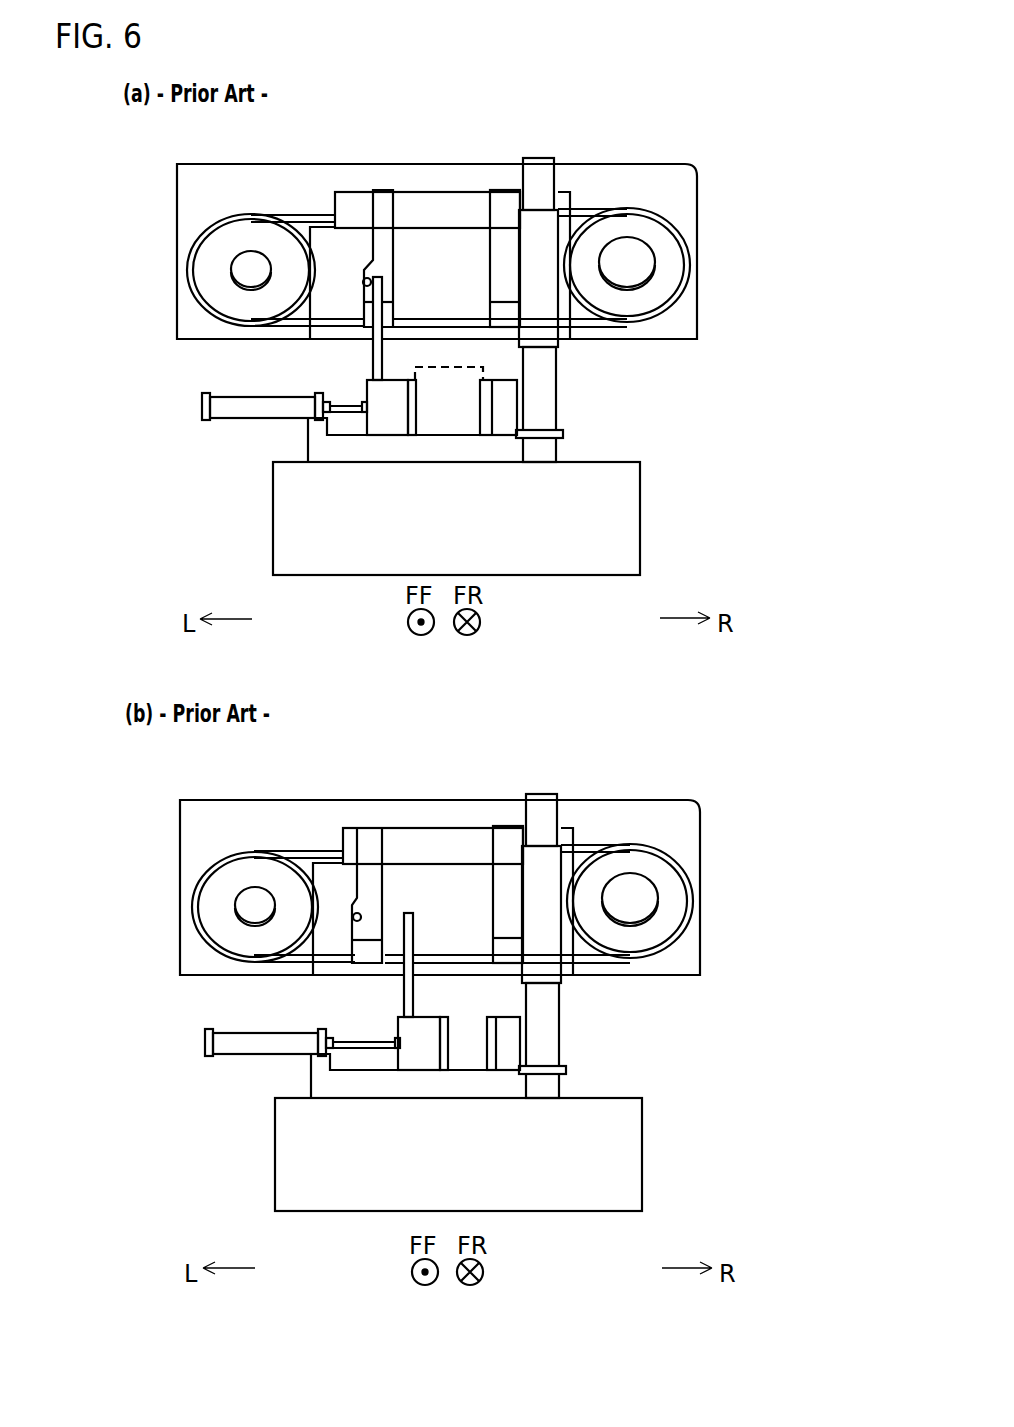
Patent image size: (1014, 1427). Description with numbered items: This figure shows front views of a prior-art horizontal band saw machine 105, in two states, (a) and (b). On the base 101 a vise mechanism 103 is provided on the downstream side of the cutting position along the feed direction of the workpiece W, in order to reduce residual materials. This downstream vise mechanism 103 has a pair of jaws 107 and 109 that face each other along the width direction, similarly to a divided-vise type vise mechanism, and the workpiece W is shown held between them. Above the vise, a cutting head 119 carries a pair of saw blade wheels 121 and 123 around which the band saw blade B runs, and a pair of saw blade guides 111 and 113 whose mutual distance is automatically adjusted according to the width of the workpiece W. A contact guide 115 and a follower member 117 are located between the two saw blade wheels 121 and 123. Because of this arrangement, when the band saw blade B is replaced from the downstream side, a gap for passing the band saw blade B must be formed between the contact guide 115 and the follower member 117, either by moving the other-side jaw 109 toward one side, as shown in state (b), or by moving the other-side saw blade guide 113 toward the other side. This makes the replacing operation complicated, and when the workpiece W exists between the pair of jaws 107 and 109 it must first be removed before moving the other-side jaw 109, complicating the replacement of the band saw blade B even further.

The horizontal band saw machine 105 is at (436, 83).
The base 101 is at (642, 505).
The vise mechanism 103 is at (467, 480).
The jaw 107 is at (503, 430).
The other-side jaw 109 is at (390, 430).
The saw blade guide 111 is at (503, 195).
The other-side saw blade guide 113 is at (382, 192).
The contact guide 115 is at (371, 354).
The follower member 117 is at (371, 282).
The cutting head 119 is at (612, 165).
The saw blade wheel 121 is at (620, 305).
The saw blade wheel 123 is at (243, 237).
The workpiece W is at (447, 365).
The band saw blade B is at (548, 338).